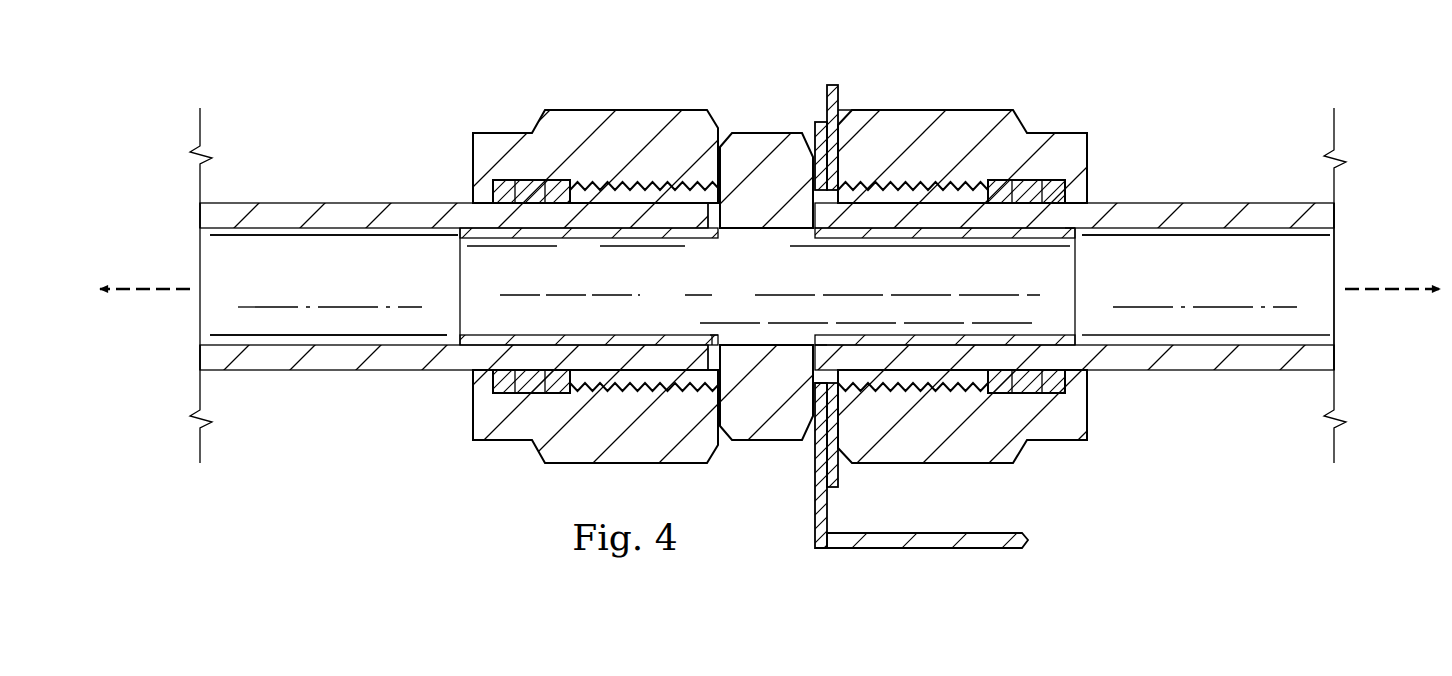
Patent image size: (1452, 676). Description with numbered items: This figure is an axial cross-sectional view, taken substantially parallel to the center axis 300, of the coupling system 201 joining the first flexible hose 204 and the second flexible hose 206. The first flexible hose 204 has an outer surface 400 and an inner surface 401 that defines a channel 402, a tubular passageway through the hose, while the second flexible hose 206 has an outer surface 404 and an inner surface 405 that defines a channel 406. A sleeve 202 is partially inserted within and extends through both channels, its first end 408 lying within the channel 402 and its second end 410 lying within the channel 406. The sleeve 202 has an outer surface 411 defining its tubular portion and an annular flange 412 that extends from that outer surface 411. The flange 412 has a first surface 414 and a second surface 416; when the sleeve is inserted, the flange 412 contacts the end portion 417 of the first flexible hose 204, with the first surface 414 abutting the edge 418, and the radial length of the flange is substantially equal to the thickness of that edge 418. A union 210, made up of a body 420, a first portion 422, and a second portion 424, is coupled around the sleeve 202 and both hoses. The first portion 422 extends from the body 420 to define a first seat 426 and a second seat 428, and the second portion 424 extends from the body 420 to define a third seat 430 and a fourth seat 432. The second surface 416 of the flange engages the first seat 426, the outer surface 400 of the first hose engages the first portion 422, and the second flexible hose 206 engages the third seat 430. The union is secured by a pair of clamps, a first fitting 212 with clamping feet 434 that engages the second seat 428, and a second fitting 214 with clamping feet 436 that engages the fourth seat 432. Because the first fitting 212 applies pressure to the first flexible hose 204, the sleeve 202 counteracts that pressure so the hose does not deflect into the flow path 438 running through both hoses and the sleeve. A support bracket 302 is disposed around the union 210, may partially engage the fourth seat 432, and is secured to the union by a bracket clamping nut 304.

The coupling system 201 is at (1117, 88).
The sleeve 202 is at (567, 240).
The first flexible hose 204 is at (258, 203).
The second flexible hose 206 is at (1253, 203).
The union 210 is at (742, 130).
The first fitting 212 is at (563, 108).
The second fitting 214 is at (983, 108).
The center axis 300 is at (1374, 286).
The support bracket 302 is at (948, 549).
The bracket clamping nut 304 is at (842, 475).
The outer surface 400 is at (323, 203).
The inner surface 401 is at (305, 229).
The channel 402 is at (228, 316).
The outer surface 404 is at (1180, 203).
The inner surface 405 is at (1230, 229).
The channel 406 is at (1305, 270).
The first end 408 is at (460, 280).
The second end 410 is at (1078, 280).
The outer surface 411 is at (1062, 212).
The flange 412 is at (725, 375).
The first surface 414 is at (710, 332).
The second surface 416 is at (712, 345).
The end portion 417 is at (700, 235).
The edge 418 is at (707, 240).
The body 420 is at (767, 142).
The first portion 422 is at (590, 182).
The second portion 424 is at (926, 200).
The first seat 426 is at (700, 217).
The second seat 428 is at (712, 180).
The third seat 430 is at (821, 345).
The fourth seat 432 is at (832, 180).
The clamping feet 434 is at (530, 180).
The clamping feet 436 is at (1030, 180).
The flow path 438 is at (232, 270).